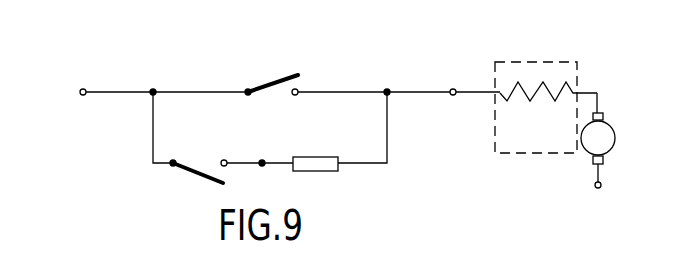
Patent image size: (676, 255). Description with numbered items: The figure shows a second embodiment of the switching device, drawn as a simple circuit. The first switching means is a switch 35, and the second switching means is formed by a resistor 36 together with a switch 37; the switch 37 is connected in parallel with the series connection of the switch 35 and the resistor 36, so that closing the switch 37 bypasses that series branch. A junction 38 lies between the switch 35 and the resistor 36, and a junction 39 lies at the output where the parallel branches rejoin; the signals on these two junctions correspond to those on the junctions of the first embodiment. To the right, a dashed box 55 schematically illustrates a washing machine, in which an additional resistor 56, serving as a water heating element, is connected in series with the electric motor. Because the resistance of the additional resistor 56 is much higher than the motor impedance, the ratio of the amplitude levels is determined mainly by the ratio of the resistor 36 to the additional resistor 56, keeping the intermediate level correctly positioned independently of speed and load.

The switch 35 is at (194, 162).
The resistor 36 is at (321, 157).
The switch 37 is at (266, 78).
The junction 38 is at (262, 160).
The junction 39 is at (455, 89).
The dashed box 55 is at (494, 146).
The additional resistor 56 is at (549, 80).